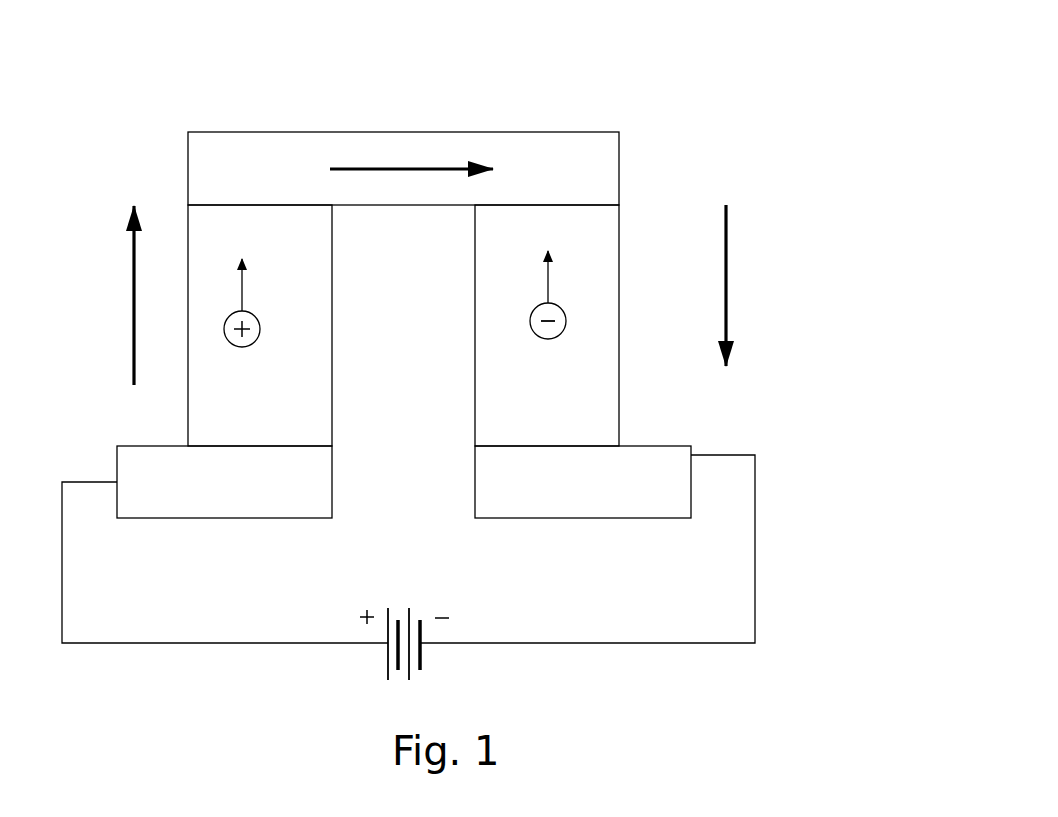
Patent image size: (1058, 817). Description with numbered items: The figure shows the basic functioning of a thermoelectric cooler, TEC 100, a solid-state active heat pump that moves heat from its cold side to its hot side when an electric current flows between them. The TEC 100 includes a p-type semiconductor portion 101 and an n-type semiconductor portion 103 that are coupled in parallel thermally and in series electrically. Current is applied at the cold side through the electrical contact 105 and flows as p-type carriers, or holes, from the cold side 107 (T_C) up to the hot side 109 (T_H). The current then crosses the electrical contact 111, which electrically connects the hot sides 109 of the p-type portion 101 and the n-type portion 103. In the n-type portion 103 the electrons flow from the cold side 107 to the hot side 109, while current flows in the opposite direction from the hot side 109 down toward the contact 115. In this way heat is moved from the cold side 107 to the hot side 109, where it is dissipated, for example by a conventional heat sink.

The TEC 100 is at (657, 89).
The p-type semiconductor portion 101 is at (332, 326).
The n-type semiconductor portion 103 is at (620, 245).
The electrical contact 105 is at (268, 518).
The cold side 107 is at (128, 425).
The hot side 109 is at (128, 176).
The electrical contact 111 is at (563, 131).
The contact 115 is at (557, 518).